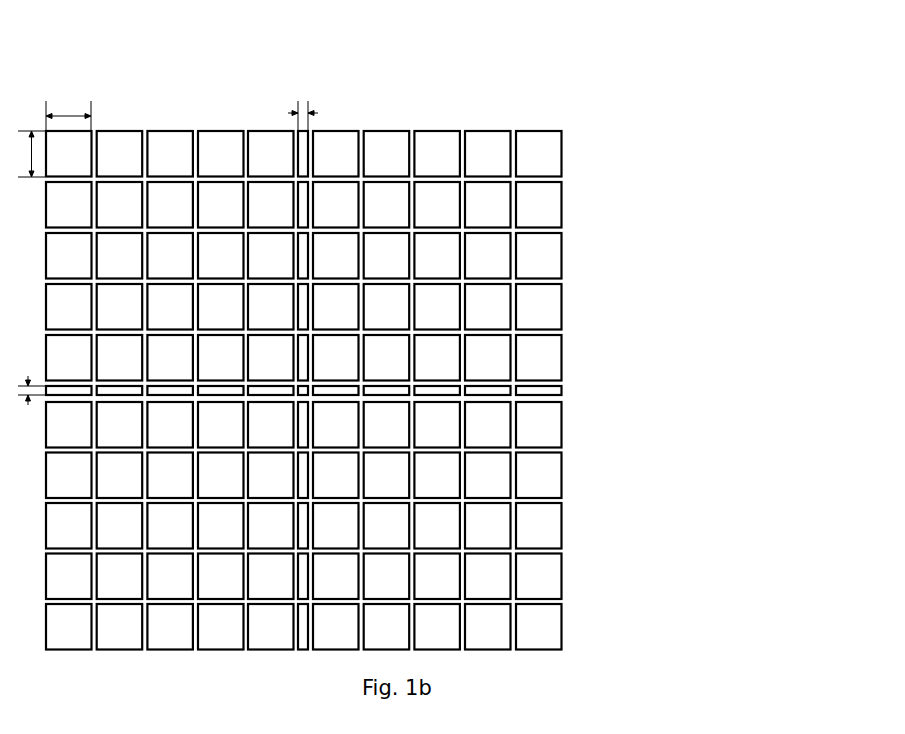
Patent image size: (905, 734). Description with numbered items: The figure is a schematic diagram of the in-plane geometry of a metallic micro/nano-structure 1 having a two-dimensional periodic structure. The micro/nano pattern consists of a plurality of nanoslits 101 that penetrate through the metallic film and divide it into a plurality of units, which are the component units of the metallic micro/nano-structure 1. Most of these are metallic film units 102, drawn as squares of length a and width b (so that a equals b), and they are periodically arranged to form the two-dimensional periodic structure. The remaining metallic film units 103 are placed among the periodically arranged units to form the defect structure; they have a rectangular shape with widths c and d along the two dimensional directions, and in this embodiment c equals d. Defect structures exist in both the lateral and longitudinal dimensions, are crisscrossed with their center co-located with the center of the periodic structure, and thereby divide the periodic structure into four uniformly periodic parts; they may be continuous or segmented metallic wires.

The metallic micro/nano-structure 1 is at (384, 351).
The nanoslit 101 is at (515, 130).
The metallic film unit 102 is at (555, 251).
The metallic film unit 103 is at (553, 391).